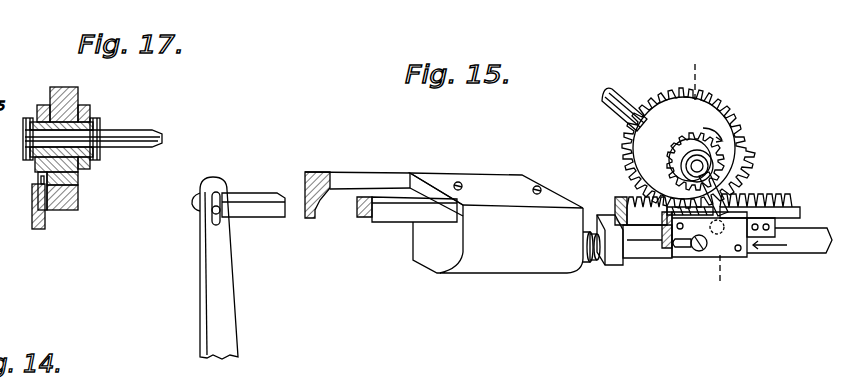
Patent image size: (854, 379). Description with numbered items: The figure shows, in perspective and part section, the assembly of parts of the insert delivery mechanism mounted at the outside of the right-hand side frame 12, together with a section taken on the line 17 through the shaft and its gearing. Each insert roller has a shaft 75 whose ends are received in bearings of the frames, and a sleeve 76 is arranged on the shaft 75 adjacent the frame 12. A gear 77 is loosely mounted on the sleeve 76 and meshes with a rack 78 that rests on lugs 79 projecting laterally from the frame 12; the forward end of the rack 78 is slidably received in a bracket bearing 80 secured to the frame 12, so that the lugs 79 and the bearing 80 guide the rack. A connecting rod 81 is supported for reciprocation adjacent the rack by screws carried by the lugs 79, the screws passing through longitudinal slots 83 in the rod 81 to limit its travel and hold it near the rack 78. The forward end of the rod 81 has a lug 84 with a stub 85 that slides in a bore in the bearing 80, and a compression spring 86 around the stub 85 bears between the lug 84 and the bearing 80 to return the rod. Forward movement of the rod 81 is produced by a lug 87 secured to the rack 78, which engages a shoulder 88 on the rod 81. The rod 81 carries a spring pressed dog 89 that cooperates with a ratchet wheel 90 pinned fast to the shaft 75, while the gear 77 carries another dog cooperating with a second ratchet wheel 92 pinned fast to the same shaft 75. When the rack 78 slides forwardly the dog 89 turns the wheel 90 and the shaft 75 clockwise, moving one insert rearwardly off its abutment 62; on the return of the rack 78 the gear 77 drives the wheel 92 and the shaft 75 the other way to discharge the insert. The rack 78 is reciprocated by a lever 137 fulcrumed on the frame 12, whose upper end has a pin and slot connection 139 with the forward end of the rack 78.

In FIG. 15, the side frame 12 is at (334, 172).
In FIG. 15, the section line 17 is at (708, 173).
In FIG. 15, the abutment 62 is at (703, 252).
In FIG. 17, the shaft 75 is at (140, 145).
In FIG. 15, the shaft 75 is at (619, 103).
In FIG. 17, the sleeve 76 is at (91, 162).
In FIG. 17, the gear 77 is at (66, 97).
In FIG. 15, the gear 77 is at (736, 140).
In FIG. 17, the rack 78 is at (80, 200).
In FIG. 15, the rack 78 is at (250, 195).
In FIG. 15, the lugs 79 is at (656, 254).
In FIG. 15, the bracket bearing 80 is at (510, 265).
In FIG. 17, the connecting rod 81 is at (45, 226).
In FIG. 15, the connecting rod 81 is at (815, 250).
In FIG. 15, the longitudinal slots 83 is at (685, 250).
In FIG. 15, the lug 84 is at (608, 212).
In FIG. 15, the stub 85 is at (590, 258).
In FIG. 15, the compression spring 86 is at (603, 258).
In FIG. 15, the lug 87 is at (768, 240).
In FIG. 15, the shoulder 88 is at (747, 207).
In FIG. 17, the spring pressed dog 89 is at (40, 185).
In FIG. 15, the spring pressed dog 89 is at (709, 197).
In FIG. 17, the ratchet wheel 90 is at (43, 108).
In FIG. 15, the ratchet wheel 90 is at (685, 146).
In FIG. 17, the ratchet wheel 92 is at (93, 120).
In FIG. 15, the lever 137 is at (204, 289).
In FIG. 15, the pin and slot connection 139 is at (212, 203).